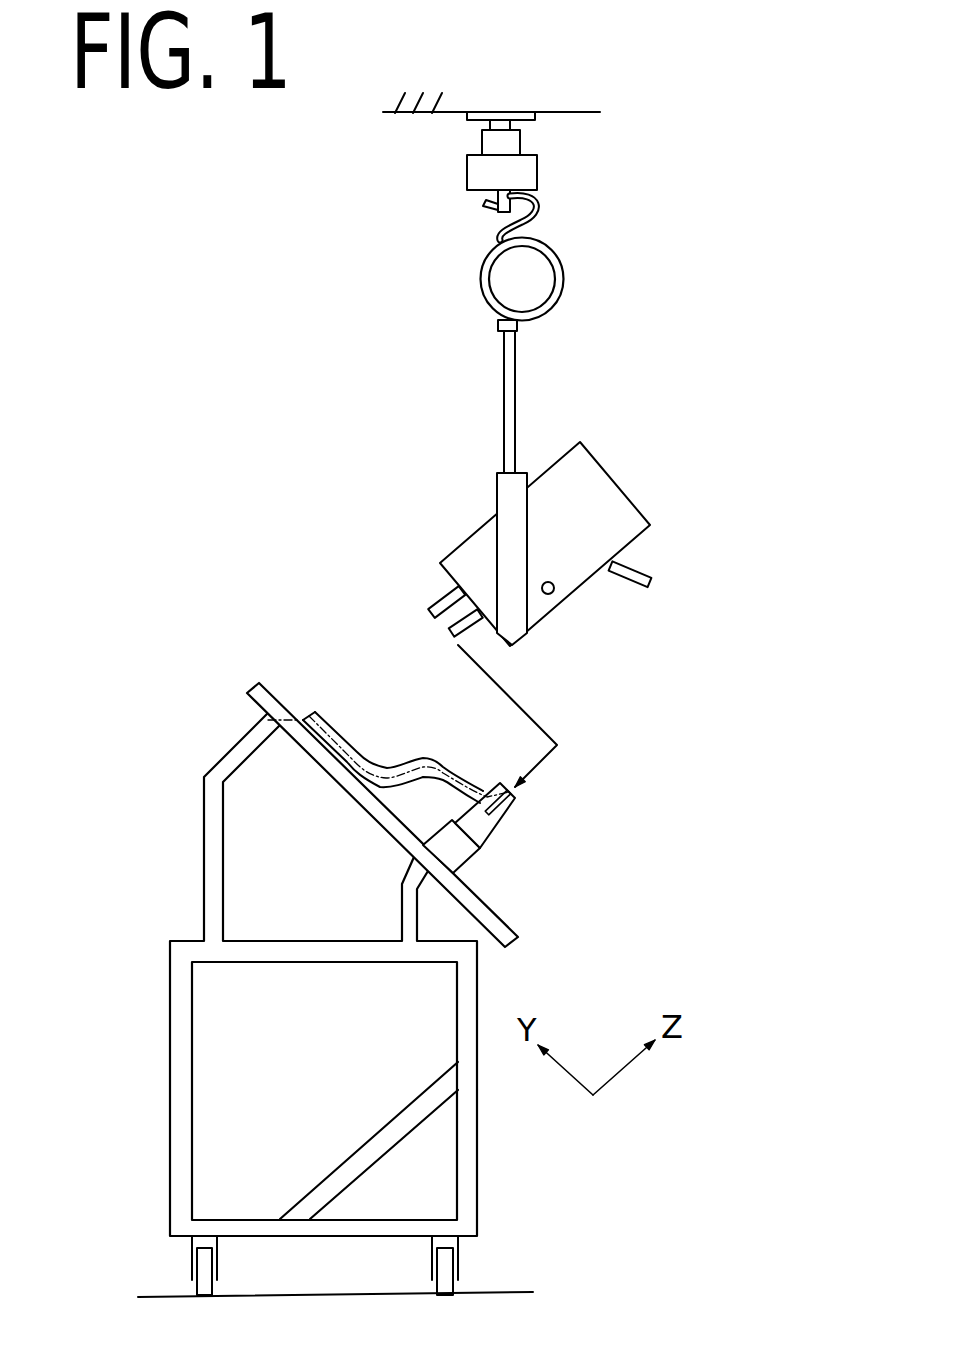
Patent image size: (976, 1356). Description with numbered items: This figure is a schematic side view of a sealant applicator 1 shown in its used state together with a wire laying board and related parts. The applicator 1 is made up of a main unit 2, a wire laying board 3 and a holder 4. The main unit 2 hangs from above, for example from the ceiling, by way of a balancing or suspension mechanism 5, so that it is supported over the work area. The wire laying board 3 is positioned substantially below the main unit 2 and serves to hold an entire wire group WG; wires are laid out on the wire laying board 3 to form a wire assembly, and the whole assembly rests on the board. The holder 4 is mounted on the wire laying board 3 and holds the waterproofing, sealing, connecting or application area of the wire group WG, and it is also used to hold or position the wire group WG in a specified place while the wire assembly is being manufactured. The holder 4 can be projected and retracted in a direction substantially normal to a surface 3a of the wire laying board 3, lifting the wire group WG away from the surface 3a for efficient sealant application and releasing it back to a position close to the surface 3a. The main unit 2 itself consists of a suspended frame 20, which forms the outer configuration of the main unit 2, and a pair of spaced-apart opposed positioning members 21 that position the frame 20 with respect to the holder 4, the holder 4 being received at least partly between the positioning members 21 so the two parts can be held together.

The applicator 1 is at (345, 465).
The main unit 2 is at (520, 566).
The suspended frame 20 is at (582, 562).
The positioning members 21 is at (443, 630).
The wire laying board 3 is at (428, 989).
The surface 3a is at (490, 897).
The holder 4 is at (503, 818).
The suspension mechanism 5 is at (563, 273).
The wire group WG is at (333, 718).